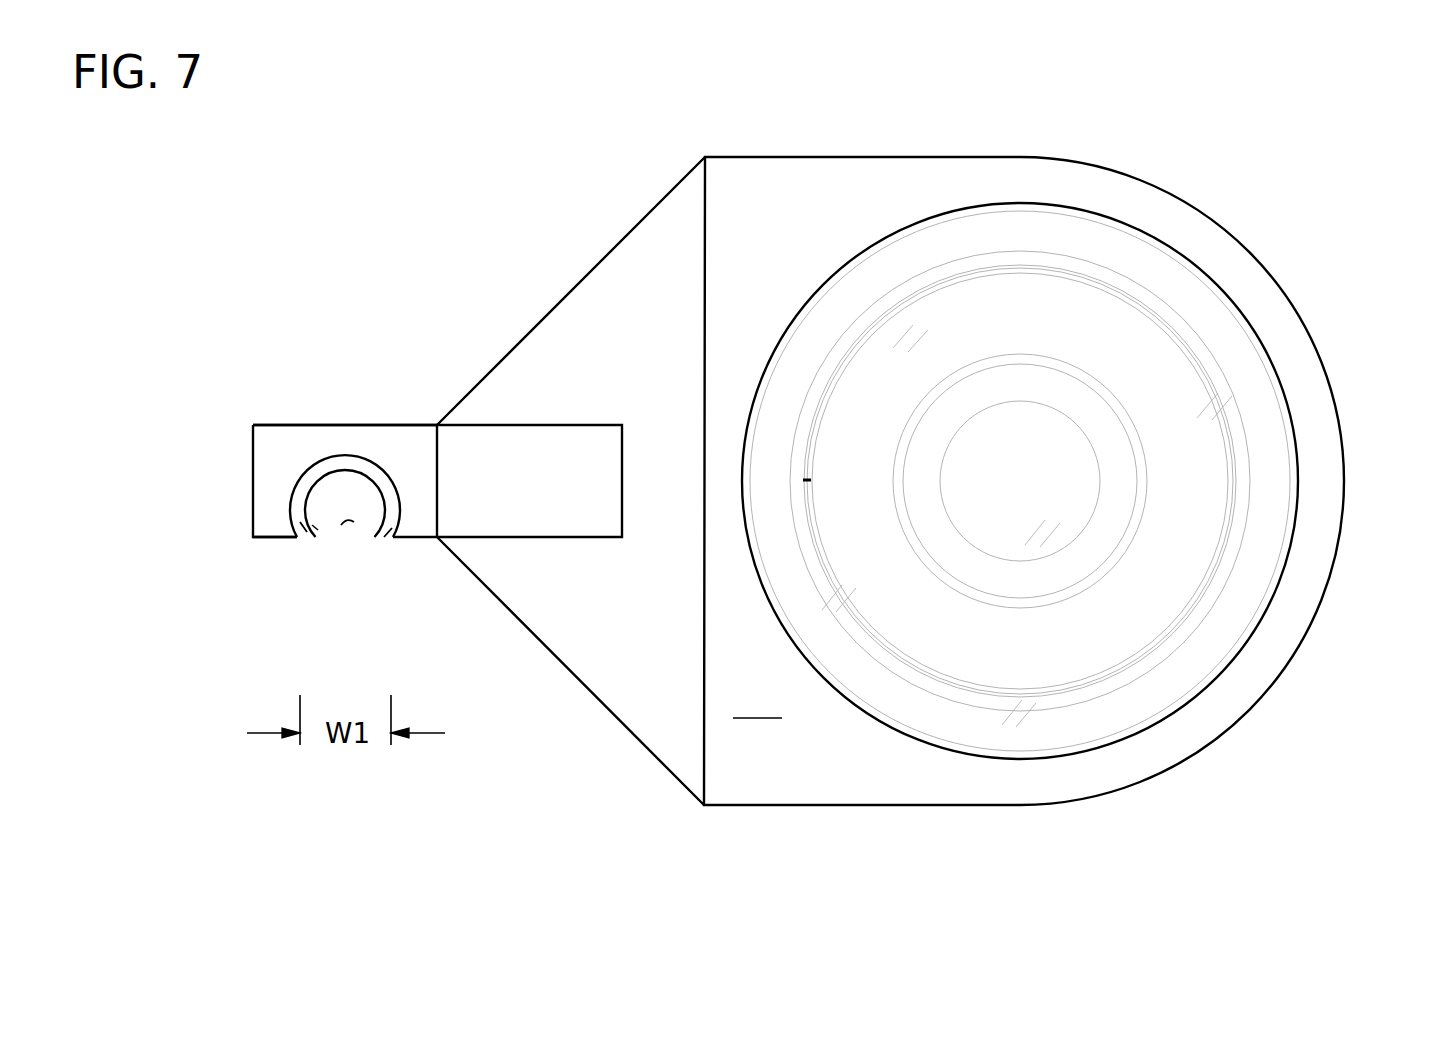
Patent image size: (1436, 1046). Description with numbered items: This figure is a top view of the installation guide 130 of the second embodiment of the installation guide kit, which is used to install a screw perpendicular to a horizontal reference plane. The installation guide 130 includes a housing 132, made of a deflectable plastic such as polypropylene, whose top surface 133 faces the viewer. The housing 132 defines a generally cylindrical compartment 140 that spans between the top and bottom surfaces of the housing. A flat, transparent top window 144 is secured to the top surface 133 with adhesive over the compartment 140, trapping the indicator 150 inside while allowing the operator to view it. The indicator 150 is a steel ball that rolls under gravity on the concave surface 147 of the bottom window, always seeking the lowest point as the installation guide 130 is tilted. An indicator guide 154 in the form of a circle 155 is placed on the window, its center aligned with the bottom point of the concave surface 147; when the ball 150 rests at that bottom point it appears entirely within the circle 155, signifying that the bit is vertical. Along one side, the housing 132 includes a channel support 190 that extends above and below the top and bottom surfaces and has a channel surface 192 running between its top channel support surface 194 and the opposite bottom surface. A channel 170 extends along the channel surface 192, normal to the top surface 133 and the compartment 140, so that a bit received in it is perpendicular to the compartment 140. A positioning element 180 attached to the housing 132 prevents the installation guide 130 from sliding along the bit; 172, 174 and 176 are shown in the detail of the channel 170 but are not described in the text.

The installation guide 130 is at (348, 166).
The housing 132 is at (568, 672).
The top surface 133 is at (1024, 481).
The compartment 140 is at (1133, 600).
The top window 144 is at (902, 708).
The concave surface 147 is at (858, 398).
The indicator 150 is at (1050, 562).
The indicator guide 154 is at (1087, 363).
The circle 155 is at (1003, 362).
The channel 170 is at (348, 485).
The outer channel wall 172 is at (393, 473).
The channel legs 174 is at (304, 532).
The channel bottom 176 is at (344, 525).
The positioning element 180 is at (312, 526).
The channel support 190 is at (330, 466).
The channel surface 192 is at (272, 538).
The top channel support surface 194 is at (270, 442).